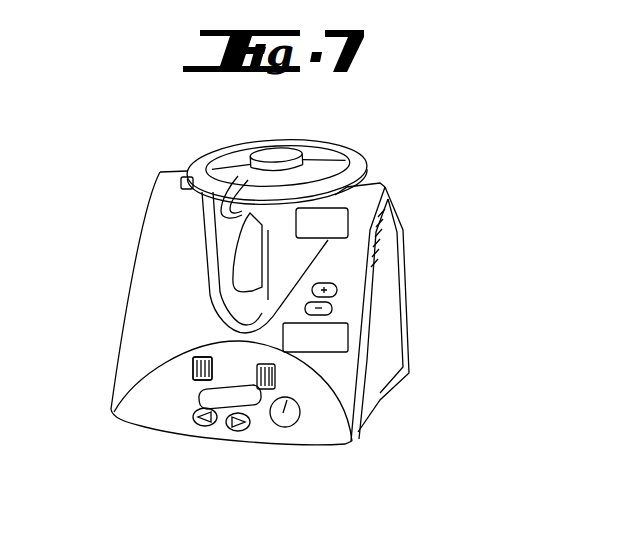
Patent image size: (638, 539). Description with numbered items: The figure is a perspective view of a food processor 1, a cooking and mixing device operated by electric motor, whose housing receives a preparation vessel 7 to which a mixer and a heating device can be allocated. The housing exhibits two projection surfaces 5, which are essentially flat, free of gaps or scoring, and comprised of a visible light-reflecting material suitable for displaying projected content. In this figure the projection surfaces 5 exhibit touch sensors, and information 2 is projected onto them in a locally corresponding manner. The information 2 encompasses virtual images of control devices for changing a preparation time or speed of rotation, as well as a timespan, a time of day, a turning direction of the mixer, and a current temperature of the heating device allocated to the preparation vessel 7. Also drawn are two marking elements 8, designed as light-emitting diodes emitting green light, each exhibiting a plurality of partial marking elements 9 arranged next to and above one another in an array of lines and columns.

The food processor 1 is at (444, 265).
The information 2 is at (271, 307).
The projection surfaces 5 is at (325, 372).
The preparation vessel 7 is at (212, 215).
The marking elements 8 is at (257, 364).
The partial marking elements 9 is at (193, 372).